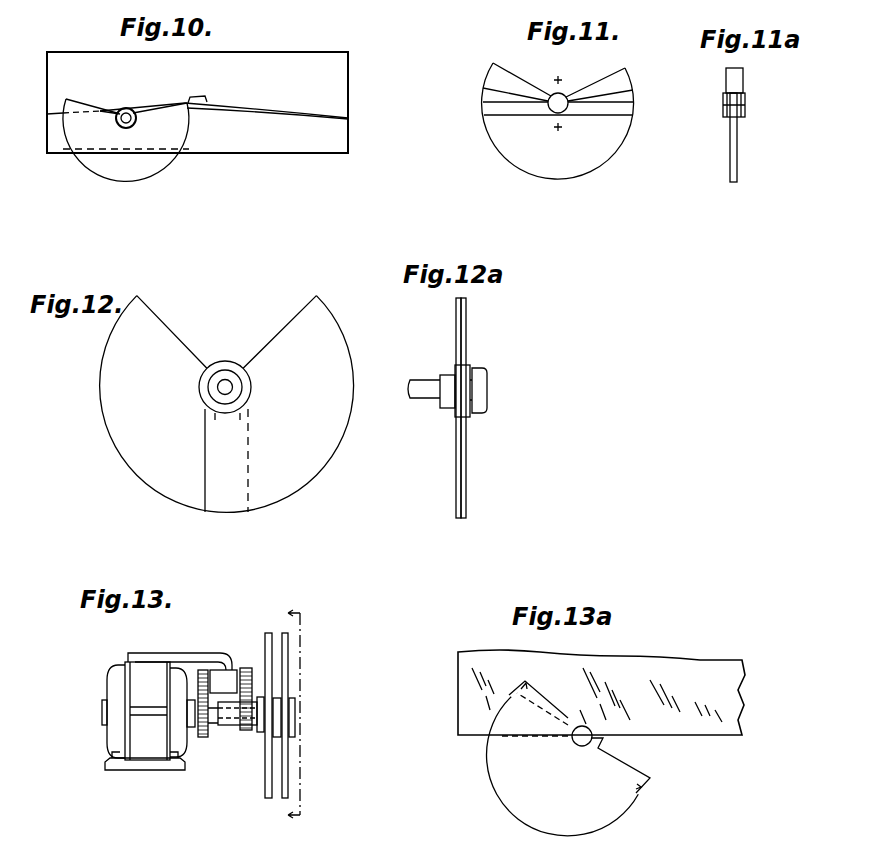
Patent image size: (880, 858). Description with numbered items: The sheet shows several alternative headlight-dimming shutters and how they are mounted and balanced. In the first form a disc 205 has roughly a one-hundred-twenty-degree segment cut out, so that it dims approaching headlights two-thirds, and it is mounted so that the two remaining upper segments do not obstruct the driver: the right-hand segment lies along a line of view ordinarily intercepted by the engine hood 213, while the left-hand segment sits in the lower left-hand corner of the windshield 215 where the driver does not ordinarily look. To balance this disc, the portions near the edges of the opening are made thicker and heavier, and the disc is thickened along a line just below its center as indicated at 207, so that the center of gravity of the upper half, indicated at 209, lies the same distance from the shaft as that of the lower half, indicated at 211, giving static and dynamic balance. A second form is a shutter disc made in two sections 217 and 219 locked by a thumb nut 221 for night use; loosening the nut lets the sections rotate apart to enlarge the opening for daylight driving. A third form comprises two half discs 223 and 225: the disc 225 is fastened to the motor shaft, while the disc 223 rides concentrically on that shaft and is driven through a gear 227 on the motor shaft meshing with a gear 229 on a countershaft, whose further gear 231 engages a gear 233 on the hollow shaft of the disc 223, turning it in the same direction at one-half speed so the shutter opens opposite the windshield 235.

In FIG. 10, the disc 205 is at (97, 163).
In FIG. 11, the disc 205 is at (520, 157).
In FIG. 11A, the disc 205 is at (730, 166).
In FIG. 11, the thickened line of the disc 207 is at (625, 112).
In FIG. 11A, the thickened line of the disc 207 is at (738, 113).
In FIG. 11, the center of gravity of upper half 209 is at (565, 80).
In FIG. 11, the center of gravity of lower half 211 is at (565, 127).
In FIG. 10, the engine hood 213 is at (218, 102).
In FIG. 10, the windshield 215 is at (337, 83).
In FIG. 12, the shutter disc section 217 is at (167, 404).
In FIG. 12A, the shutter disc section 217 is at (456, 330).
In FIG. 12, the shutter disc section 219 is at (322, 397).
In FIG. 12A, the shutter disc section 219 is at (466, 321).
In FIG. 12, the thumb nut 221 is at (226, 365).
In FIG. 12A, the thumb nut 221 is at (484, 415).
In FIG. 13, the half disc 223 is at (268, 633).
In FIG. 13A, the half disc 223 is at (620, 768).
In FIG. 13, the half disc 225 is at (285, 632).
In FIG. 13A, the half disc 225 is at (533, 697).
In FIG. 13, the gear 227 is at (205, 737).
In FIG. 13, the gear 229 is at (203, 653).
In FIG. 13, the gear 231 is at (243, 668).
In FIG. 13, the gear 233 is at (245, 730).
In FIG. 13A, the windshield 235 is at (633, 662).